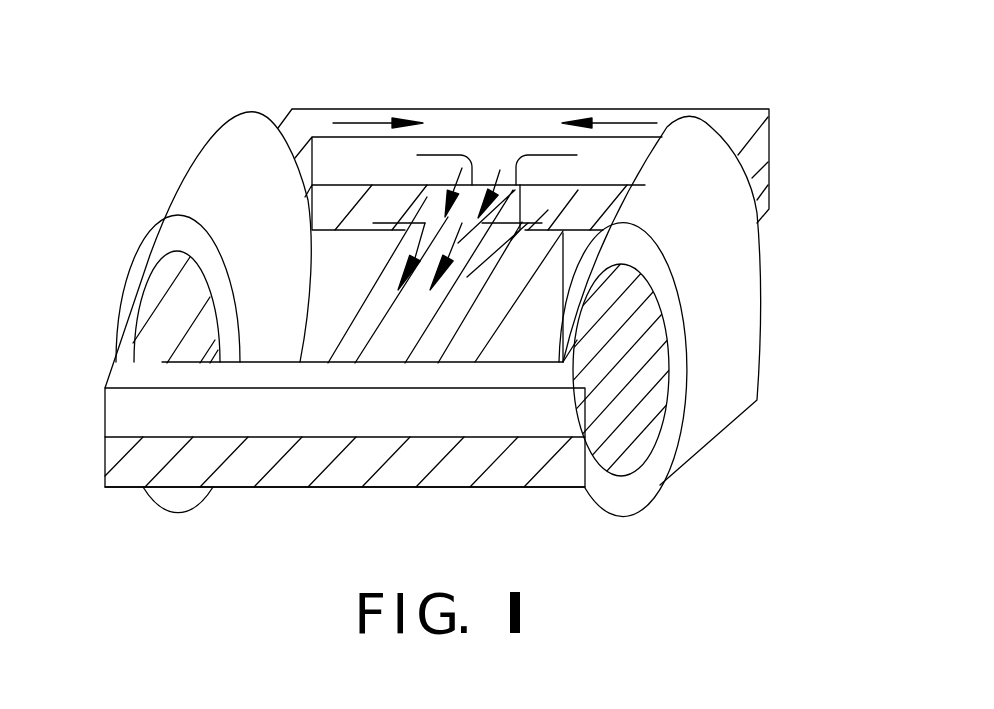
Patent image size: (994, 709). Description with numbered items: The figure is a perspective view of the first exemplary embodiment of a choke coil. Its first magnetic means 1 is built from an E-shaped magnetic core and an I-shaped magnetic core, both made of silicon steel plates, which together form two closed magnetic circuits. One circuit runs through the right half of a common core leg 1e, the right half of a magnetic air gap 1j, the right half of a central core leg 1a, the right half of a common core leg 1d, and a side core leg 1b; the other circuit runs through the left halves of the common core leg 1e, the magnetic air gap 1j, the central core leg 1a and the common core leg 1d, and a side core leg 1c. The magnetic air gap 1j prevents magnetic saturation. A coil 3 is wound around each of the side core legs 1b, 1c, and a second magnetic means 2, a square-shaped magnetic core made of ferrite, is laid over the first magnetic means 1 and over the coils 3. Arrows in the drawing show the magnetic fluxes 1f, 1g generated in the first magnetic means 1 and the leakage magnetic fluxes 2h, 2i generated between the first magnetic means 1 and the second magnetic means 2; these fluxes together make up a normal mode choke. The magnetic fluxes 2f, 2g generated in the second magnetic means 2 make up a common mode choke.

The first magnetic means 1 is at (455, 478).
The central core leg 1a is at (455, 315).
The side core leg 1b is at (613, 417).
The side core leg 1c is at (203, 350).
The common core leg 1d is at (295, 477).
The common core leg 1e is at (387, 190).
The magnetic flux 1f is at (465, 246).
The magnetic flux 1g is at (427, 223).
The magnetic air gap 1j is at (485, 195).
The second magnetic means 2 is at (323, 422).
The magnetic flux 2f is at (620, 123).
The magnetic flux 2g is at (340, 122).
The leakage magnetic flux 2h is at (542, 157).
The leakage magnetic flux 2i is at (445, 157).
The coil 3 is at (225, 153).